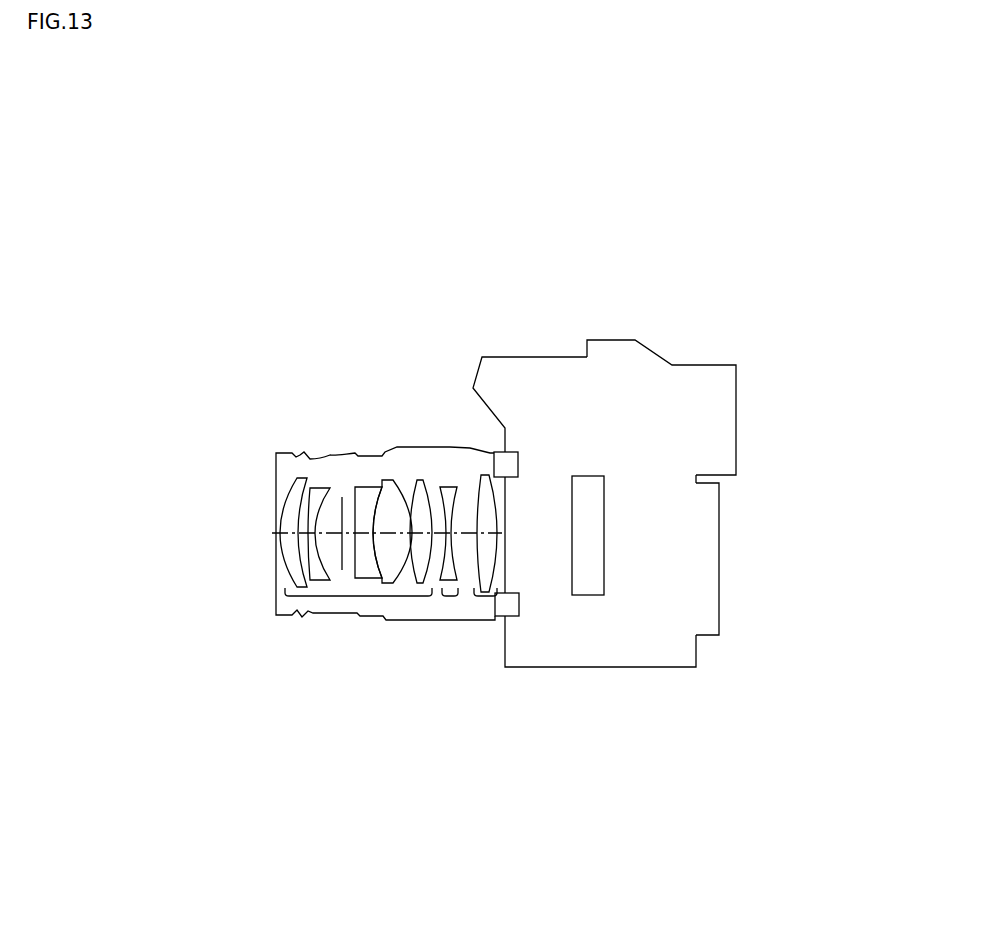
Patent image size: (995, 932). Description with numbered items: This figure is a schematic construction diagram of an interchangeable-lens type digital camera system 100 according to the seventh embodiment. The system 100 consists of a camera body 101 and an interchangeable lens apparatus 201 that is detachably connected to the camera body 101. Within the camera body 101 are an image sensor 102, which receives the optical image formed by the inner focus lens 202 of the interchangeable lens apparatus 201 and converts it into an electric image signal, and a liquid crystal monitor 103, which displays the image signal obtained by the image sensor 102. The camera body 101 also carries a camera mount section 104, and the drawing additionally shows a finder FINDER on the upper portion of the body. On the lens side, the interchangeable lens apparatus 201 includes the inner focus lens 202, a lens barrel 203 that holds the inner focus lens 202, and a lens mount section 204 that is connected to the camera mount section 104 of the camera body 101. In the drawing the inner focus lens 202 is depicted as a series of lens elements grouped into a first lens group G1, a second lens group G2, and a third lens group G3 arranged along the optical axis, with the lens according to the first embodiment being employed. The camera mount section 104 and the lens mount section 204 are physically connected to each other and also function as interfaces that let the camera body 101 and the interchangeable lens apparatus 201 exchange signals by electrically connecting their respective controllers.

The interchangeable-lens type digital camera system 100 is at (275, 318).
The camera body 101 is at (603, 363).
The image sensor 102 is at (590, 608).
The liquid crystal monitor 103 is at (727, 553).
The camera mount section 104 is at (518, 437).
The interchangeable lens apparatus 201 is at (273, 442).
The inner focus lens 202 is at (498, 715).
The lens barrel 203 is at (382, 442).
The lens mount section 204 is at (493, 445).
The first lens group G1 is at (330, 600).
The second lens group G2 is at (447, 600).
The third lens group G3 is at (487, 600).
The finder FINDER is at (743, 425).